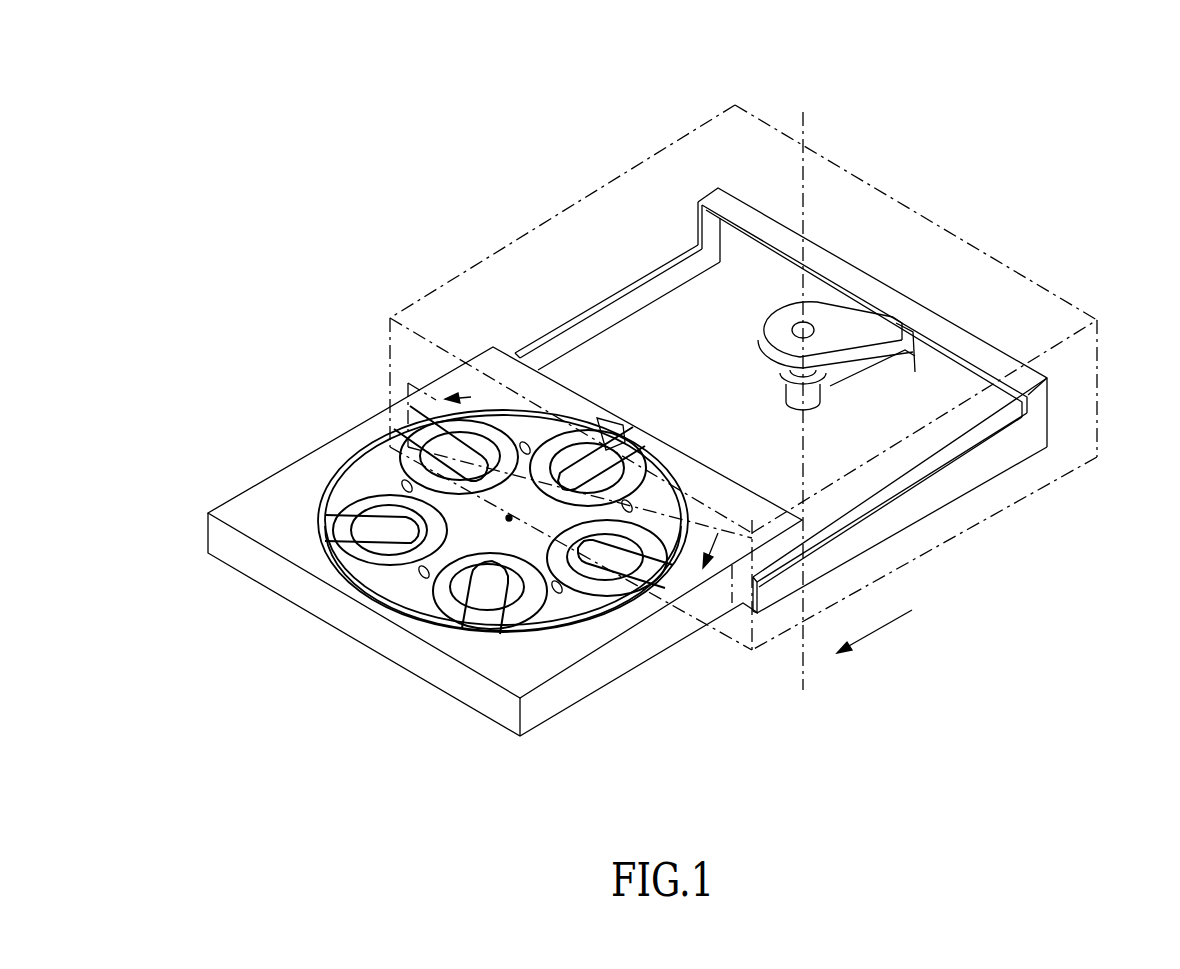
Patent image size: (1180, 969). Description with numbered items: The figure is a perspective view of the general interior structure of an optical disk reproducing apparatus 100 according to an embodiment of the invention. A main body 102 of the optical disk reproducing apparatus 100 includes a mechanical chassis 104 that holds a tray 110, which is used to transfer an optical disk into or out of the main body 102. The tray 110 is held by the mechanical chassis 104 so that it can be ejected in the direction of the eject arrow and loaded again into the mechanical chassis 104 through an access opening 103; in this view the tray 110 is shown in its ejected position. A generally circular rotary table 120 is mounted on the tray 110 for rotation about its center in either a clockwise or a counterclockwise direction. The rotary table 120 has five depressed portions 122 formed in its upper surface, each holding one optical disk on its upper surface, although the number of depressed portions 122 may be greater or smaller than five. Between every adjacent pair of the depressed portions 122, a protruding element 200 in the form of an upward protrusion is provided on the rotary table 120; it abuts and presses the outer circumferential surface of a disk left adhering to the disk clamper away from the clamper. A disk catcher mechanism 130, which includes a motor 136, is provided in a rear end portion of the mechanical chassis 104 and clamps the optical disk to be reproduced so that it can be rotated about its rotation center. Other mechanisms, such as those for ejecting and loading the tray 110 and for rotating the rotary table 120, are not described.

The optical disk reproducing apparatus 100 is at (878, 132).
The main body 102 is at (1003, 268).
The access opening 103 is at (392, 353).
The mechanical chassis 104 is at (1010, 447).
The tray 110 is at (380, 643).
The rotary table 120 is at (412, 603).
The depressed portions 122 is at (524, 443).
The disk catcher mechanism 130 is at (752, 393).
The motor 136 is at (818, 404).
The protruding element 200 is at (472, 420).